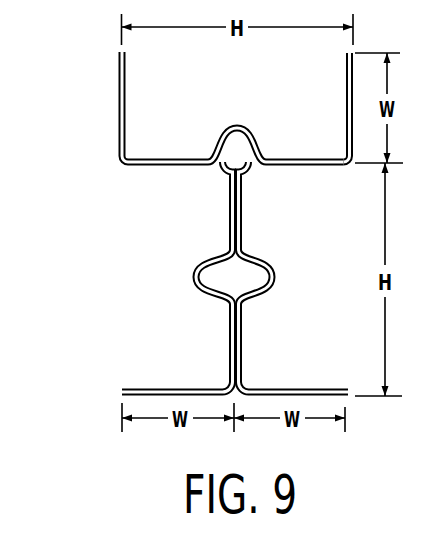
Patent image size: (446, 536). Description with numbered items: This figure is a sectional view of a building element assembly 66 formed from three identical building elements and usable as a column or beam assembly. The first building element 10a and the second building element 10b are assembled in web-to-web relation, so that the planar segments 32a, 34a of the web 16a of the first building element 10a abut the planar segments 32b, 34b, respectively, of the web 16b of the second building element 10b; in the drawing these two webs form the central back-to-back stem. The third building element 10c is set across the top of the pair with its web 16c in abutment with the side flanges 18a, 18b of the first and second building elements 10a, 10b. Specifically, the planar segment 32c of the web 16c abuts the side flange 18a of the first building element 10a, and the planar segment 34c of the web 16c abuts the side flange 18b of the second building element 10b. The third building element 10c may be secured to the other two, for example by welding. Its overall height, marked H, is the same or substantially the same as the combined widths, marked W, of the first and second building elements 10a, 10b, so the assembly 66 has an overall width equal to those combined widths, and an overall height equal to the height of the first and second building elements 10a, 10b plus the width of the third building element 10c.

The building element assembly 66 is at (80, 66).
The first building element 10a is at (165, 277).
The second building element 10b is at (305, 277).
The third building element 10c is at (223, 144).
The web of the first building element 16a is at (192, 272).
The web of the second building element 16b is at (280, 272).
The web of the third building element 16c is at (235, 165).
The side flange of the first building element 18a is at (140, 177).
The side flange of the second building element 18b is at (328, 178).
The planar segment of web 16a 32a is at (230, 200).
The planar segment of web 16b 32b is at (243, 212).
The planar segment of web 16c 32c is at (122, 153).
The planar segment of web 16a 34a is at (230, 325).
The planar segment of web 16b 34b is at (243, 315).
The planar segment of web 16c 34c is at (285, 155).